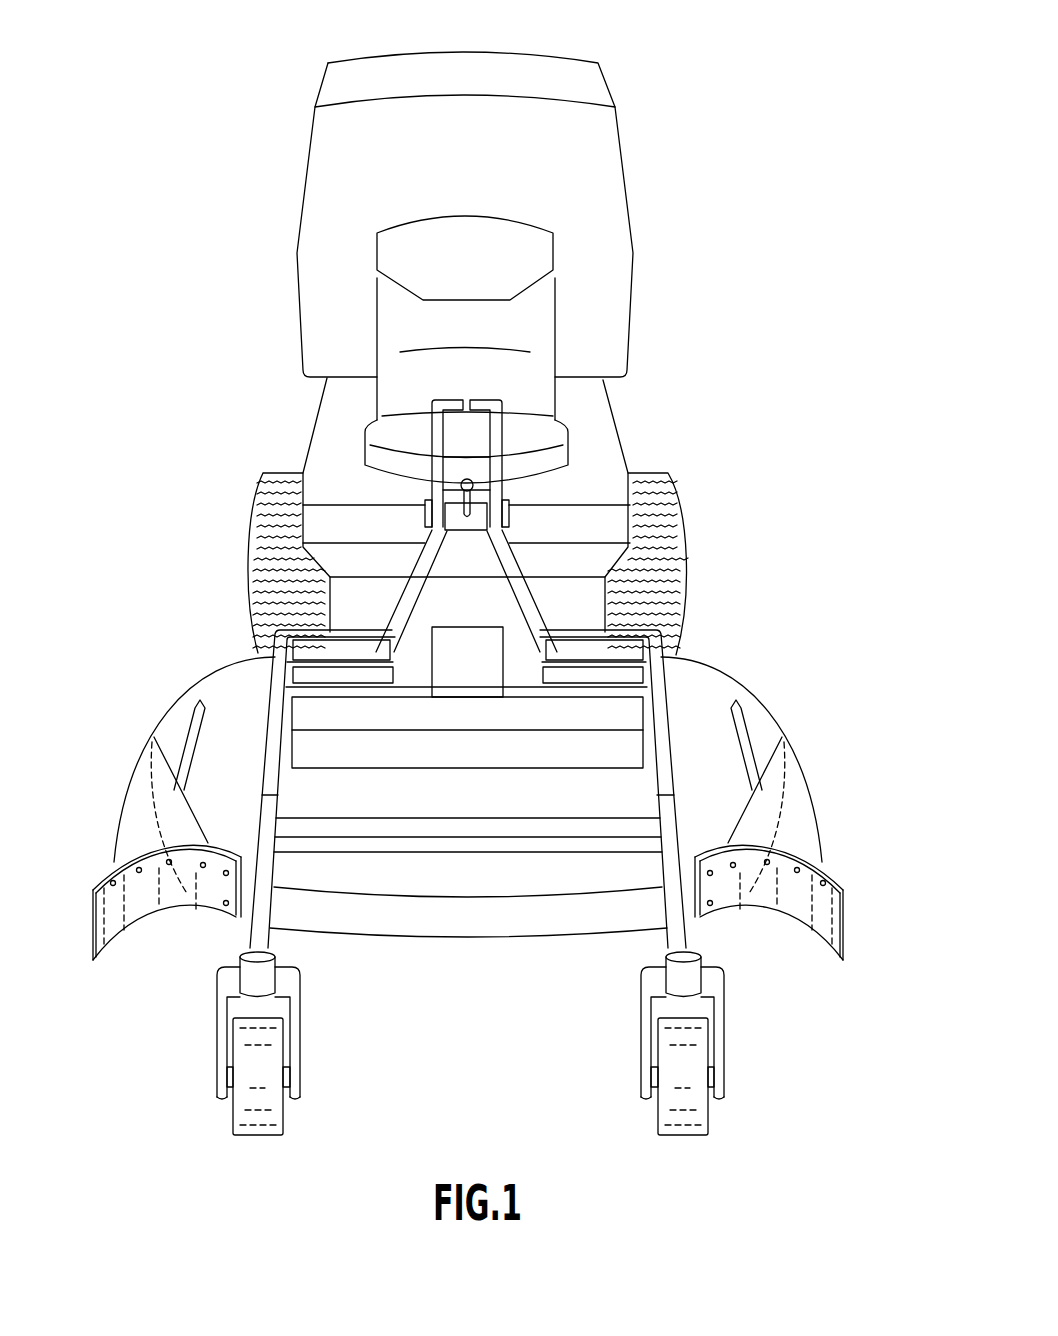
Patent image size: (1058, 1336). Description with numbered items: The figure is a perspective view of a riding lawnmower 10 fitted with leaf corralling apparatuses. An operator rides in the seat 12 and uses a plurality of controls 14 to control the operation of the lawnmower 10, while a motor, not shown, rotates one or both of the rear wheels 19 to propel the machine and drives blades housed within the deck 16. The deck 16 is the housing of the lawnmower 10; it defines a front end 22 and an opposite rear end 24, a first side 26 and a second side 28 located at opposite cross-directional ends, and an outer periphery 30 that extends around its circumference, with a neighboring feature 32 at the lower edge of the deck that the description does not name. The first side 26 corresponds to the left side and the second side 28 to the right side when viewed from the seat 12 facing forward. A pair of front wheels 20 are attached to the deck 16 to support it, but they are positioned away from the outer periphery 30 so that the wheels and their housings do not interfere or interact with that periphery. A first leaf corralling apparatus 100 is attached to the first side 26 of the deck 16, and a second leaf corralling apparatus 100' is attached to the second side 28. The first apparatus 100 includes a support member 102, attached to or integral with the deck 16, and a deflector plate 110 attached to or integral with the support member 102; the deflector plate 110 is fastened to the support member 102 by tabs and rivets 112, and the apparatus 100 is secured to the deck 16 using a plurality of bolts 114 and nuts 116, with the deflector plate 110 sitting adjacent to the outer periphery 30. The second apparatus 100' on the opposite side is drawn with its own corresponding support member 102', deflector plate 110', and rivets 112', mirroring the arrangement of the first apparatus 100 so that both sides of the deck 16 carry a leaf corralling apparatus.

The lawnmower 10 is at (188, 150).
The seat 12 is at (535, 312).
The controls 14 is at (515, 392).
The deck 16 is at (705, 683).
The rear wheels 19 is at (262, 541).
The front wheels 20 is at (238, 1120).
The front end 22 is at (471, 955).
The rear end 24 is at (570, 615).
The first side 26 is at (815, 728).
The second side 28 is at (127, 730).
The outer periphery 30 is at (403, 930).
The deck skirt section 32 is at (565, 920).
The first leaf corralling apparatus 100 is at (799, 790).
The second leaf corralling apparatus 100' is at (134, 797).
The support member 102 is at (786, 890).
The deflector plate 102' is at (147, 890).
The deflector plate 110 is at (766, 951).
The fastener 110' is at (177, 954).
The rivets 112 is at (821, 940).
The adjustment slot 112' is at (116, 942).
The bolts 114 is at (778, 757).
The nuts 116 is at (773, 777).